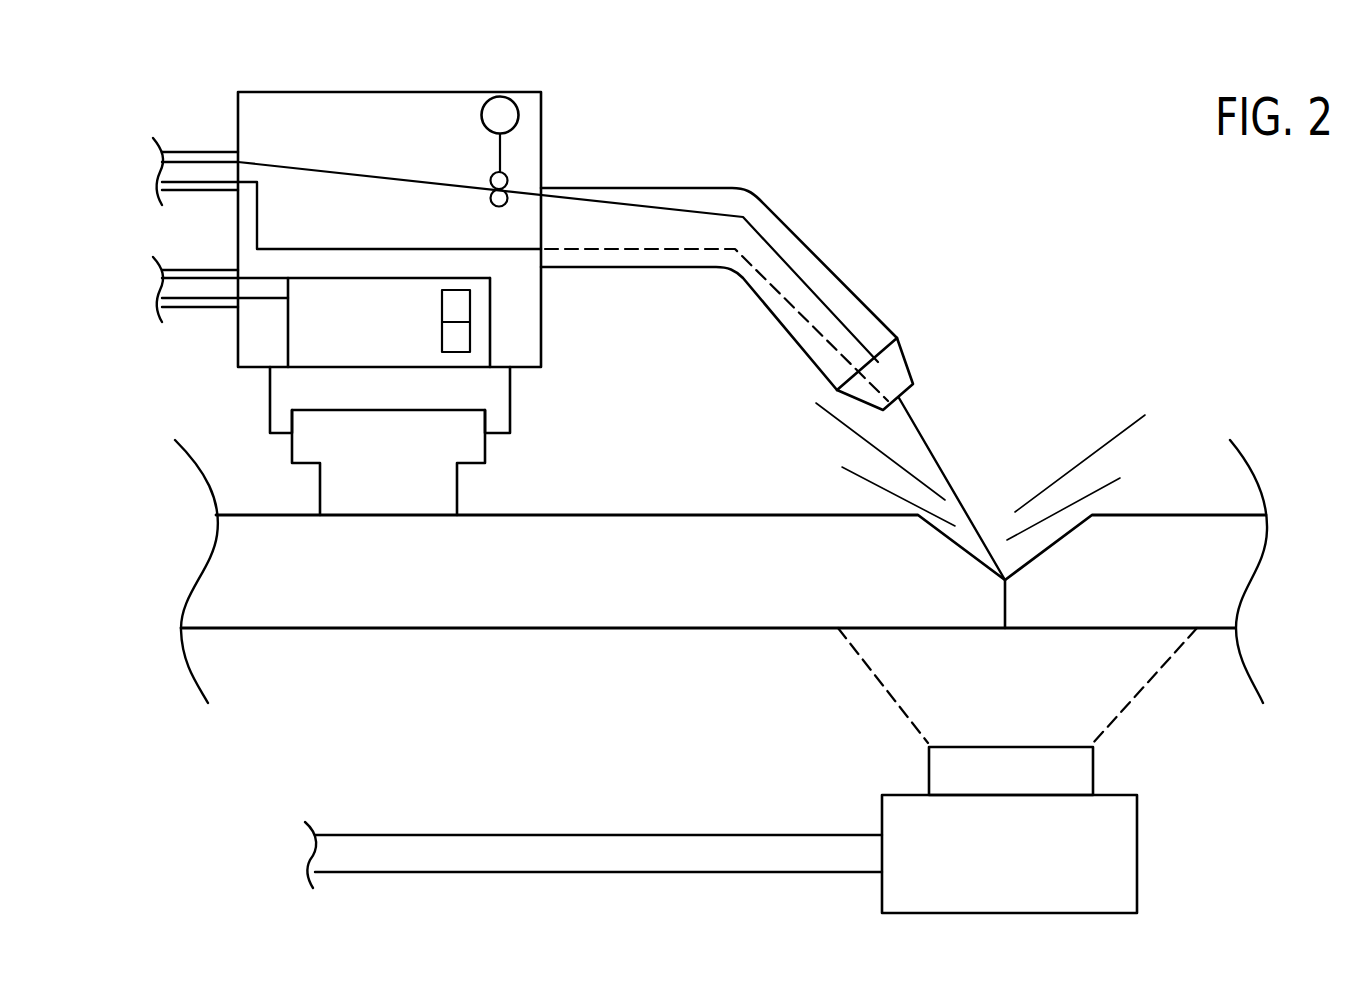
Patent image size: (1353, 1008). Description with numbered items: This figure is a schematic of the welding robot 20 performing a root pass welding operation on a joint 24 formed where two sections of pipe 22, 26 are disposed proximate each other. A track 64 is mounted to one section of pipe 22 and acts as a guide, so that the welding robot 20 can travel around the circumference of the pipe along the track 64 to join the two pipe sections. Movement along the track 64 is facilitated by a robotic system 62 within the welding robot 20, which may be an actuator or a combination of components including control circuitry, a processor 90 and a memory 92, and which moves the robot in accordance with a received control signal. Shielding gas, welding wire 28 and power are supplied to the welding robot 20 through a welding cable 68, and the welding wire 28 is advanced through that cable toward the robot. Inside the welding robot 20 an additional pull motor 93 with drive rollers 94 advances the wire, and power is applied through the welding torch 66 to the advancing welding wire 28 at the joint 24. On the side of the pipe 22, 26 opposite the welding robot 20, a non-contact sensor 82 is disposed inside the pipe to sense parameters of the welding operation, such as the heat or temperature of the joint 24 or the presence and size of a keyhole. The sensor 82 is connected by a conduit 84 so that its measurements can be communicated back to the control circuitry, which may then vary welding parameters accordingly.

The welding robot 20 is at (392, 92).
The section of pipe 22 is at (447, 628).
The joint 24 is at (1050, 442).
The section of pipe 26 is at (1212, 628).
The welding wire 28 is at (331, 168).
The robotic system 62 is at (493, 323).
The track 64 is at (458, 488).
The welding torch 66 is at (692, 187).
The welding cable 68 is at (207, 150).
The sensor 82 is at (1138, 850).
The conduit 84 is at (195, 307).
The processor 90 is at (441, 303).
The memory 92 is at (441, 333).
The pull motor 93 is at (513, 100).
The drive roller 94 is at (495, 175).